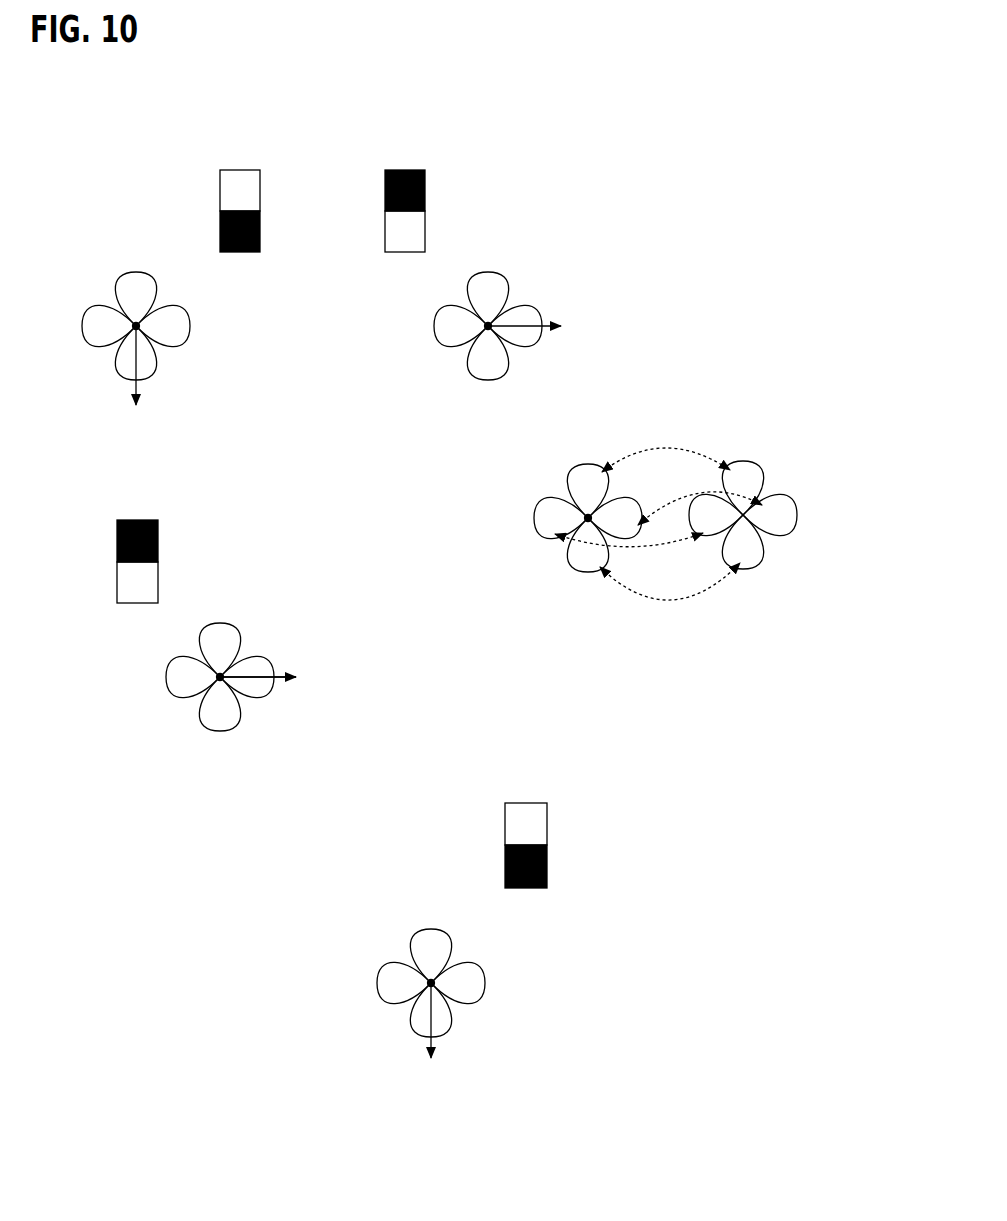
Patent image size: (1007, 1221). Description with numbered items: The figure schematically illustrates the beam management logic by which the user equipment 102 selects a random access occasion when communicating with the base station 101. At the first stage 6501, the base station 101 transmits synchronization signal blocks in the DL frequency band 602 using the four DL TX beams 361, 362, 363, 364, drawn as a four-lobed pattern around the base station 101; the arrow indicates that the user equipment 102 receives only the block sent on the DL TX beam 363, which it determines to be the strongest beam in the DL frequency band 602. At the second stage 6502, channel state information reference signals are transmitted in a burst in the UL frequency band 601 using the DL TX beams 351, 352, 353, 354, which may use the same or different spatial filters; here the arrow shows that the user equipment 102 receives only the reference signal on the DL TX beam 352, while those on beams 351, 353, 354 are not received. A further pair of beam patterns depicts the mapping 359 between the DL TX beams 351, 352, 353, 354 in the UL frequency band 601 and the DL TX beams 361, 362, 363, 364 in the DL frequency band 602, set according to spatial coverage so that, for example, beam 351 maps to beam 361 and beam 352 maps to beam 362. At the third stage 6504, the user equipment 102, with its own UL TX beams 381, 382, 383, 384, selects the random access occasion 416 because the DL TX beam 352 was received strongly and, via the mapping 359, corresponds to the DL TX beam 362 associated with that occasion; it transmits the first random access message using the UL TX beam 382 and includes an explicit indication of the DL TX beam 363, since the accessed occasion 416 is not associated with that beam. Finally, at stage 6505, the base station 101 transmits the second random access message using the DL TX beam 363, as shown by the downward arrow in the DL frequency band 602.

The base station 101 is at (139, 329).
The user equipment 102 is at (591, 521).
The DL TX beam 351 is at (487, 278).
The DL TX beam 352 is at (533, 315).
The DL TX beam 353 is at (493, 378).
The DL TX beam 354 is at (446, 315).
The mapping 359 is at (657, 445).
The DL TX beam 361 is at (135, 278).
The DL TX beam 362 is at (186, 315).
The DL TX beam 363 is at (125, 360).
The DL TX beam 364 is at (95, 315).
The UL TX beam 381 is at (217, 630).
The UL TX beam 382 is at (266, 663).
The UL TX beam 383 is at (226, 730).
The UL TX beam 384 is at (179, 663).
The random access occasion 416 is at (303, 654).
The UL frequency band 601 is at (220, 176).
The DL frequency band 602 is at (220, 222).
The SSB transmission stage 6501 is at (109, 213).
The CSI-RS transmission stage 6502 is at (497, 213).
The RO selection stage 6504 is at (229, 541).
The RAmsg2 transmission stage 6505 is at (405, 818).